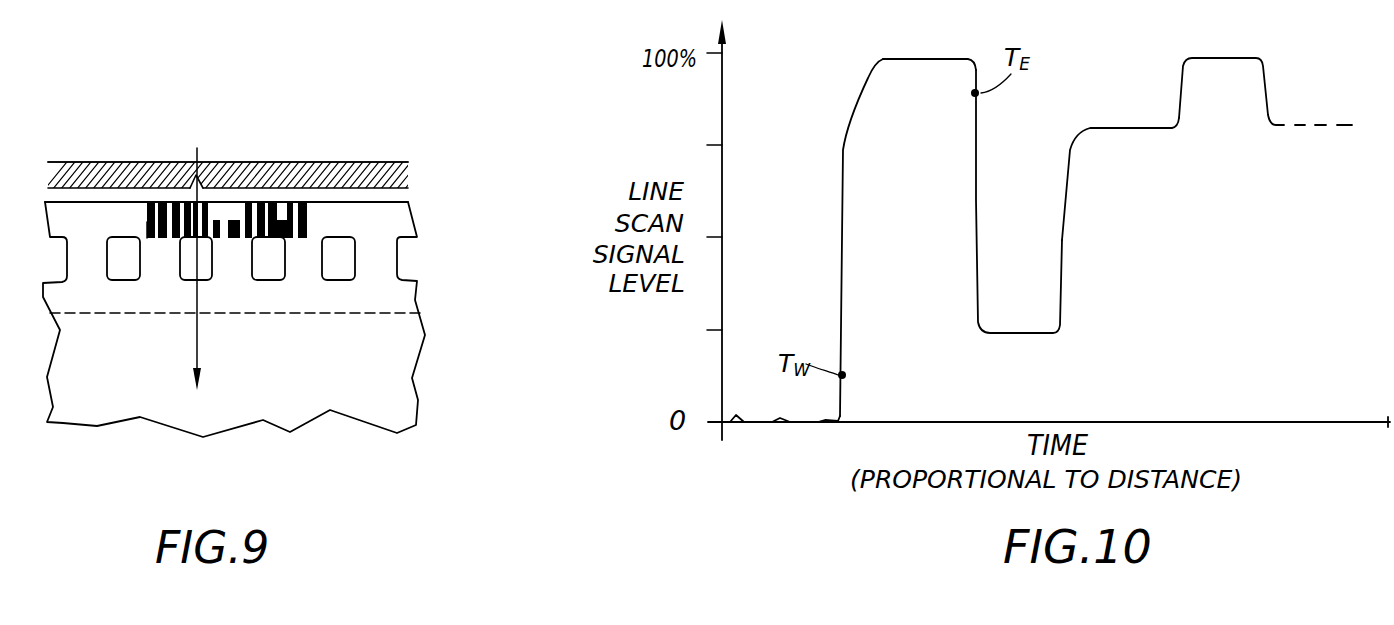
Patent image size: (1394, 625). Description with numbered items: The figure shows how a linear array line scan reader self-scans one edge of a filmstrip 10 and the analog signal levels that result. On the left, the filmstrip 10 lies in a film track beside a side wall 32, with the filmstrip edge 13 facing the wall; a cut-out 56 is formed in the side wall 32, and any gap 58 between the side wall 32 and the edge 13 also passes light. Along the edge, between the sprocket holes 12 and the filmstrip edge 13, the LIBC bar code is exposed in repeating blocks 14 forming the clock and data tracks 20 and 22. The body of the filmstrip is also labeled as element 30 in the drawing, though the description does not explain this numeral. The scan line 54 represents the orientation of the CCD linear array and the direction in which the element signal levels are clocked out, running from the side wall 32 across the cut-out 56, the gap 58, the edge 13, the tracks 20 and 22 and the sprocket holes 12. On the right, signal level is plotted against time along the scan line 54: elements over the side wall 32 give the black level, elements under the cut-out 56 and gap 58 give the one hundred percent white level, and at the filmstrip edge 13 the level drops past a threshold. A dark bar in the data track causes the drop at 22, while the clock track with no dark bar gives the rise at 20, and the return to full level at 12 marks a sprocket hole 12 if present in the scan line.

In FIG. 9, the filmstrip 10 is at (320, 371).
In FIG. 9, the sprocket holes 12 is at (187, 280).
In FIG. 10, the sprocket holes 12 is at (1270, 58).
In FIG. 9, the filmstrip edge 13 is at (82, 203).
In FIG. 9, the blocks 14 is at (232, 217).
In FIG. 9, the clock track 20 is at (147, 222).
In FIG. 10, the clock track 20 is at (1080, 132).
In FIG. 9, the data track 22 is at (147, 211).
In FIG. 10, the data track 22 is at (1066, 333).
In FIG. 9, the die 30 is at (476, 290).
In FIG. 9, the side wall 32 is at (408, 182).
In FIG. 9, the scan line 54 is at (197, 333).
In FIG. 9, the cut-out 56 is at (205, 171).
In FIG. 10, the cut-out 56 is at (872, 64).
In FIG. 9, the gap 58 is at (318, 194).
In FIG. 10, the gap 58 is at (872, 64).